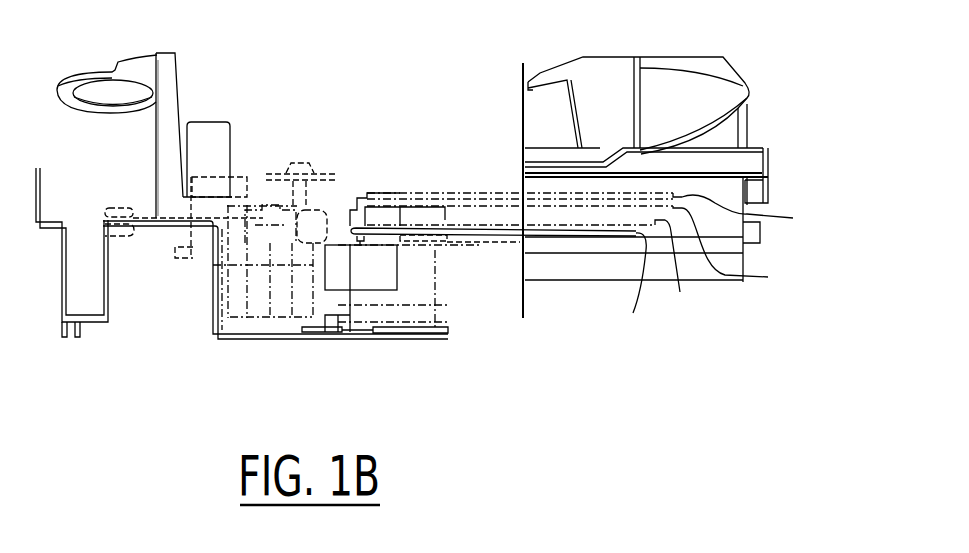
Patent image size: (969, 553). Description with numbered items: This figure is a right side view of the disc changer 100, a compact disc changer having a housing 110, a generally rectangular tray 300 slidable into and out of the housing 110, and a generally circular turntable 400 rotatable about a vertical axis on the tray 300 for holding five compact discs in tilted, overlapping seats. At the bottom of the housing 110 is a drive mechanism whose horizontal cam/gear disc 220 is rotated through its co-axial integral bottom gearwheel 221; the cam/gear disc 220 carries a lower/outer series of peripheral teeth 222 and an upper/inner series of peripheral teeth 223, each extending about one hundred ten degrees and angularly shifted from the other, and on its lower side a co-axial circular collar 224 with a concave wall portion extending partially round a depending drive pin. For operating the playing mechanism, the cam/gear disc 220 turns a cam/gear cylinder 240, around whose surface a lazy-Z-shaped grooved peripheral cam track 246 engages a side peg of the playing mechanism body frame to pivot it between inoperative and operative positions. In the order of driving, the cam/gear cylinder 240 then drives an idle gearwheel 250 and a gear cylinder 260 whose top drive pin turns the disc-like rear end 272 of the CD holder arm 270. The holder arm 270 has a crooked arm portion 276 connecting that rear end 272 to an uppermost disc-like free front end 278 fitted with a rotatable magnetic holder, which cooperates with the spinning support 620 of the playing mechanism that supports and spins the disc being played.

The disc changer 100 is at (397, 53).
The housing 110 is at (578, 280).
The cam/gear disc 220 is at (490, 190).
The bottom gearwheel 221 is at (650, 285).
The lower/outer series of peripheral teeth 222 is at (745, 251).
The upper/inner series of peripheral teeth 223 is at (758, 215).
The circular collar 224 is at (674, 279).
The cam/gear cylinder 240 is at (435, 280).
The grooved peripheral cam track 246 is at (403, 328).
The idle gearwheel 250 is at (315, 334).
The gear cylinder 260 is at (228, 300).
The CD holder arm 270 is at (178, 100).
The disc-like rear end 272 is at (232, 205).
The crooked arm portion 276 is at (157, 143).
The free front end 278 is at (90, 72).
The tray 300 is at (770, 160).
The turntable 400 is at (747, 57).
The spinning support 620 is at (313, 173).